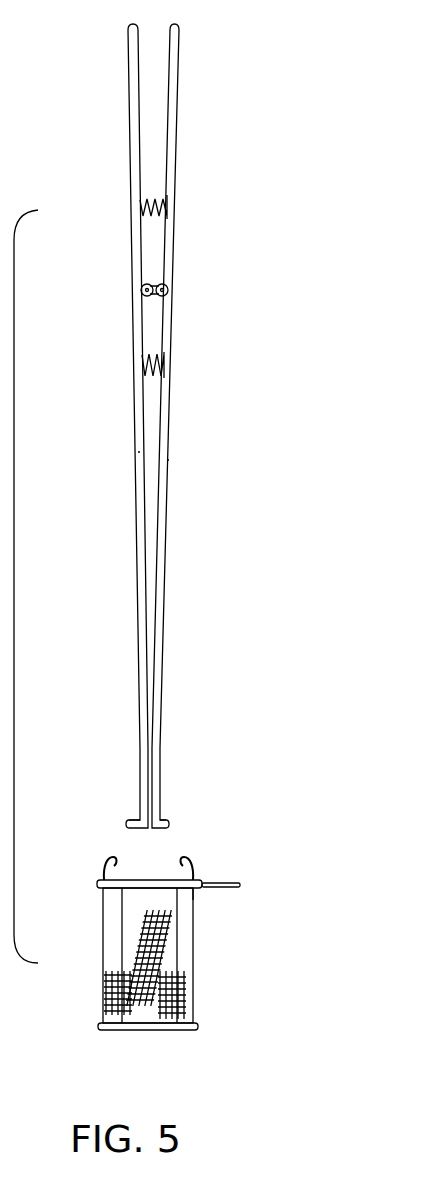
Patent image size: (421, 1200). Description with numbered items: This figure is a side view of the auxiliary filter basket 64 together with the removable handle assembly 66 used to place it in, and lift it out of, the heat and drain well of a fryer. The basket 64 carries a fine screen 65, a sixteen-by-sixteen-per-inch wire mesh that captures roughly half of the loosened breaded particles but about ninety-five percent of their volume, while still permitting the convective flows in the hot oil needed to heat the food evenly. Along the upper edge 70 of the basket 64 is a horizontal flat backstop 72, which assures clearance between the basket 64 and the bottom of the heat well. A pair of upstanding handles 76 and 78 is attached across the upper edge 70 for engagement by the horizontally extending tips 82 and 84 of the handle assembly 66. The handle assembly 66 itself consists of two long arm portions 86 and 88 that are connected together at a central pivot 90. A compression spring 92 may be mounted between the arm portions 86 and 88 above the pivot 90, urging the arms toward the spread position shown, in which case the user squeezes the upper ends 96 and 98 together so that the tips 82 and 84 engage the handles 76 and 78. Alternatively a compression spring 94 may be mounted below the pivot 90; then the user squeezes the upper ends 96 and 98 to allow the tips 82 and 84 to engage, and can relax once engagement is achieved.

The auxiliary filter basket 64 is at (184, 928).
The fine screen 65 is at (130, 938).
The removable handle assembly 66 is at (154, 426).
The upper edge 70 is at (203, 873).
The horizontal flat backstop 72 is at (212, 890).
The upstanding handle 76 is at (105, 865).
The upstanding handle 78 is at (190, 872).
The horizontally extending tip 82 is at (133, 815).
The horizontally extending tip 84 is at (163, 815).
The arm portion 86 is at (137, 452).
The arm portion 88 is at (168, 460).
The central pivot 90 is at (165, 290).
The compression spring 92 is at (168, 198).
The compression spring 94 is at (165, 355).
The upper end 96 is at (128, 92).
The upper end 98 is at (178, 110).